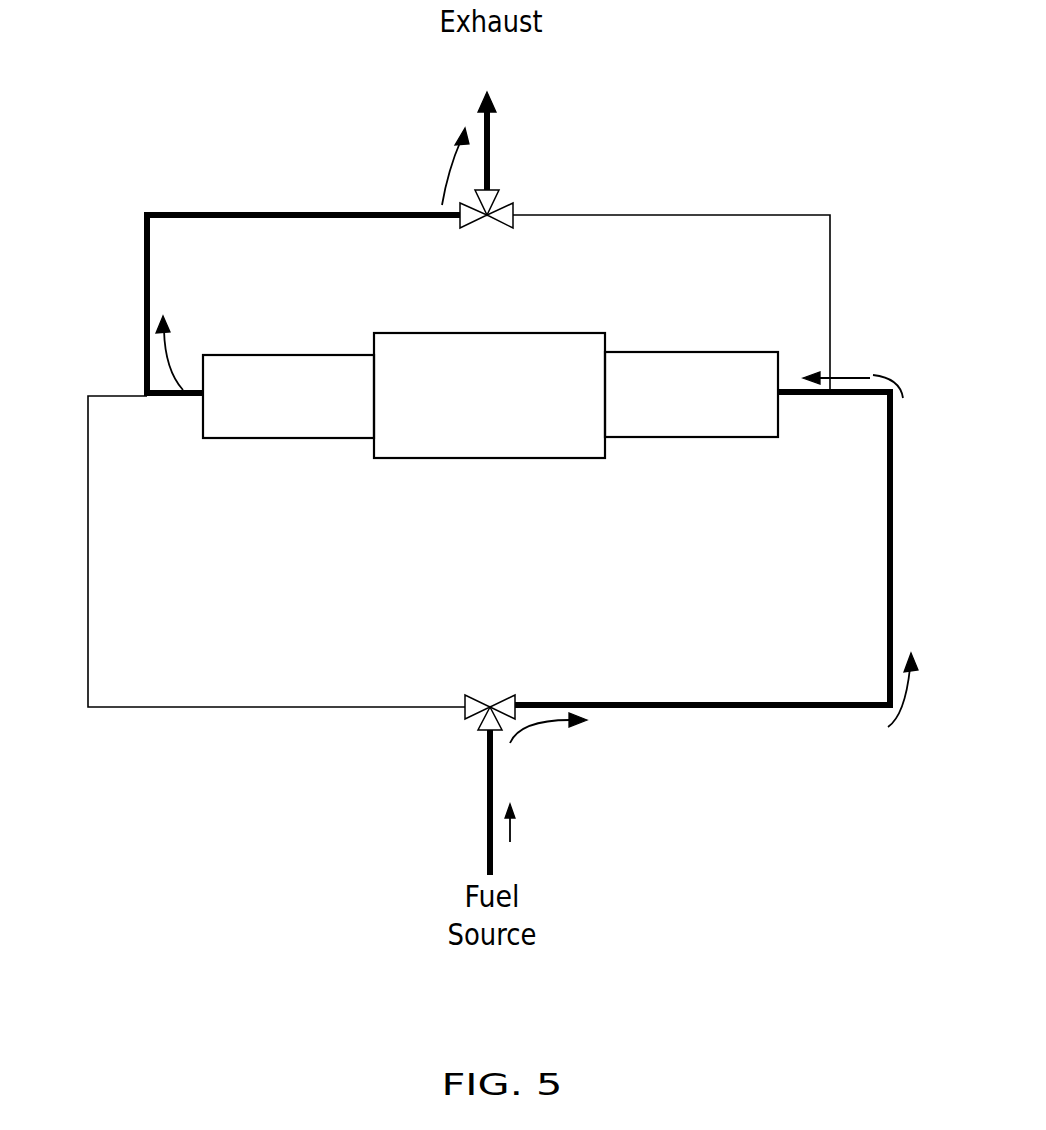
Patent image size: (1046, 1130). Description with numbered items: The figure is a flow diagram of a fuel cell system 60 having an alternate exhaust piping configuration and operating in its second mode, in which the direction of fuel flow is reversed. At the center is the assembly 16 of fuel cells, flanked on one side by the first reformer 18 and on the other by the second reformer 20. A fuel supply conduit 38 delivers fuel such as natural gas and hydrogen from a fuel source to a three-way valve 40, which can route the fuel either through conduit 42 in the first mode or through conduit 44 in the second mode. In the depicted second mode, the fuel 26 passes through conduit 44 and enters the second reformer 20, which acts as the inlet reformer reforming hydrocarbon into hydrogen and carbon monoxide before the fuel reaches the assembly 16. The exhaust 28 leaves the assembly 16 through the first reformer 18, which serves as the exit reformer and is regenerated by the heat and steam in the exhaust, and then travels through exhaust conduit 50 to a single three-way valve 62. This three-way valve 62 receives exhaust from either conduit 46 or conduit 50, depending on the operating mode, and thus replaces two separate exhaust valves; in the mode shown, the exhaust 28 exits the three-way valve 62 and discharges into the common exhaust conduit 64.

The fuel cell system 60 is at (122, 101).
The assembly of fuel cells 16 is at (440, 460).
The first reformer 18 is at (272, 440).
The second reformer 20 is at (700, 439).
The fuel 26 is at (878, 375).
The exhaust 28 is at (452, 196).
The fuel supply conduit 38 is at (487, 812).
The three-way valve 40 is at (490, 700).
The conduit 42 is at (228, 710).
The conduit 44 is at (893, 580).
The exhaust conduit 46 is at (830, 290).
The exhaust conduit 50 is at (146, 308).
The three-way valve 62 is at (489, 226).
The common exhaust conduit 64 is at (490, 133).